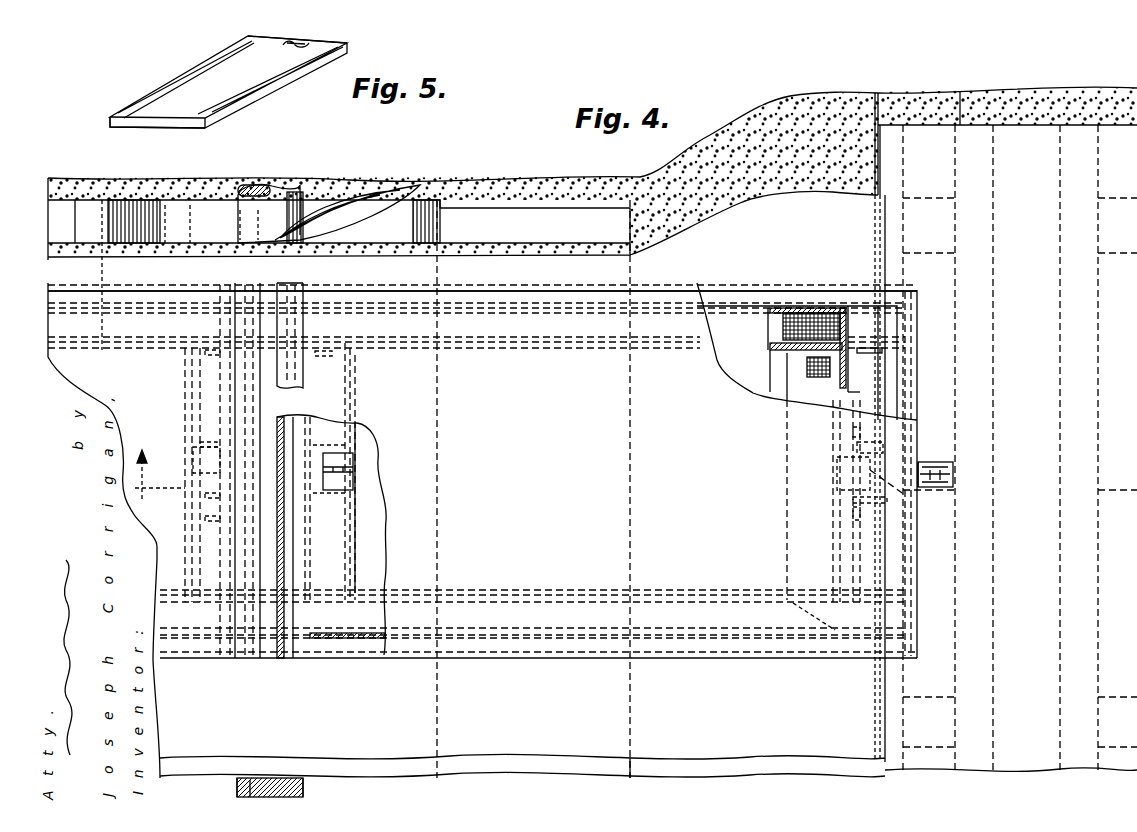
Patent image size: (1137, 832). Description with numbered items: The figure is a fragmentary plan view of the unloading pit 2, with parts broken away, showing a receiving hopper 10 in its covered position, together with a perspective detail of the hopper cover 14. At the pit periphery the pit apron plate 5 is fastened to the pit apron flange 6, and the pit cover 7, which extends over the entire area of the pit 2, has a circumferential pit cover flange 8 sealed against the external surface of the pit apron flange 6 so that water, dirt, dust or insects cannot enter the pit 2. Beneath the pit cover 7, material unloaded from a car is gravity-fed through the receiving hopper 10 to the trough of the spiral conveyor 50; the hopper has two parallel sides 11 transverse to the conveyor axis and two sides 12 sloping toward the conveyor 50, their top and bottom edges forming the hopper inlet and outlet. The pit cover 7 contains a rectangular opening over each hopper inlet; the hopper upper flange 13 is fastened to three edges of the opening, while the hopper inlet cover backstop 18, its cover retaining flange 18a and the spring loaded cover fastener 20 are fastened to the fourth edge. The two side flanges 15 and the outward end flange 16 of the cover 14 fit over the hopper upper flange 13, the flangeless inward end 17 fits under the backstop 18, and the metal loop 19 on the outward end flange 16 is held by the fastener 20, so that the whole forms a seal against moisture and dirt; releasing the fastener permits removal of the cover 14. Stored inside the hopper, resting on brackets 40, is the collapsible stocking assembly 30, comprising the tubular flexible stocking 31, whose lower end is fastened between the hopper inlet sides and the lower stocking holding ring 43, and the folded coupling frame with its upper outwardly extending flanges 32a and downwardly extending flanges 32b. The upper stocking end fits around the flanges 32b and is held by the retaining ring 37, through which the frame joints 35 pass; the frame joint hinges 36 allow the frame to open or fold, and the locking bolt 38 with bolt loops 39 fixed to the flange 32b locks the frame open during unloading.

In FIG. 4, the unloading pit 2 is at (892, 96).
In FIG. 4, the peripheral pit apron plate 5 is at (1042, 130).
In FIG. 4, the pit apron flange 6 is at (880, 168).
In FIG. 4, the pit cover 7 is at (900, 209).
In FIG. 4, the pit cover flange 8 is at (886, 228).
In FIG. 4, the receiving hopper 10 is at (219, 700).
In FIG. 4, the parallel sides 11 is at (720, 300).
In FIG. 4, the sloping sides 12 is at (903, 318).
In FIG. 4, the hopper upper flange 13 is at (203, 295).
In FIG. 5, the hopper cover 14 is at (195, 105).
In FIG. 4, the hopper cover 14 is at (88, 292).
In FIG. 5, the side flanges 15 is at (173, 88).
In FIG. 4, the side flanges 15 is at (138, 290).
In FIG. 5, the outward end flange 16 is at (267, 39).
In FIG. 4, the outward end flange 16 is at (917, 562).
In FIG. 5, the flangeless inward end 17 is at (157, 112).
In FIG. 4, the flangeless inward end 17 is at (290, 405).
In FIG. 4, the hopper inlet cover backstop 18 is at (266, 660).
In FIG. 4, the hopper inlet cover backstop cover retaining flange 18a is at (286, 290).
In FIG. 5, the metal loop 19 is at (301, 40).
In FIG. 4, the metal loop 19 is at (920, 462).
In FIG. 4, the spring loaded cover fastener 20 is at (953, 478).
In FIG. 4, the collapsible stocking assembly 30 is at (384, 530).
In FIG. 4, the tubular open-ended flexible stocking 31 is at (205, 333).
In FIG. 4, the upper outwardly extending flanges 32a is at (358, 586).
In FIG. 4, the downwardly extending flanges 32b is at (384, 548).
In FIG. 4, the frame joints 35 is at (372, 440).
In FIG. 4, the frame joint hinges 36 is at (350, 478).
In FIG. 4, the retaining ring 37 is at (360, 498).
In FIG. 4, the locking bolt 38 is at (853, 520).
In FIG. 4, the bolt loops 39 is at (850, 430).
In FIG. 4, the brackets 40 is at (218, 356).
In FIG. 4, the lower stocking holding ring 43 is at (840, 312).
In FIG. 4, the spiral conveyor 50 is at (360, 200).